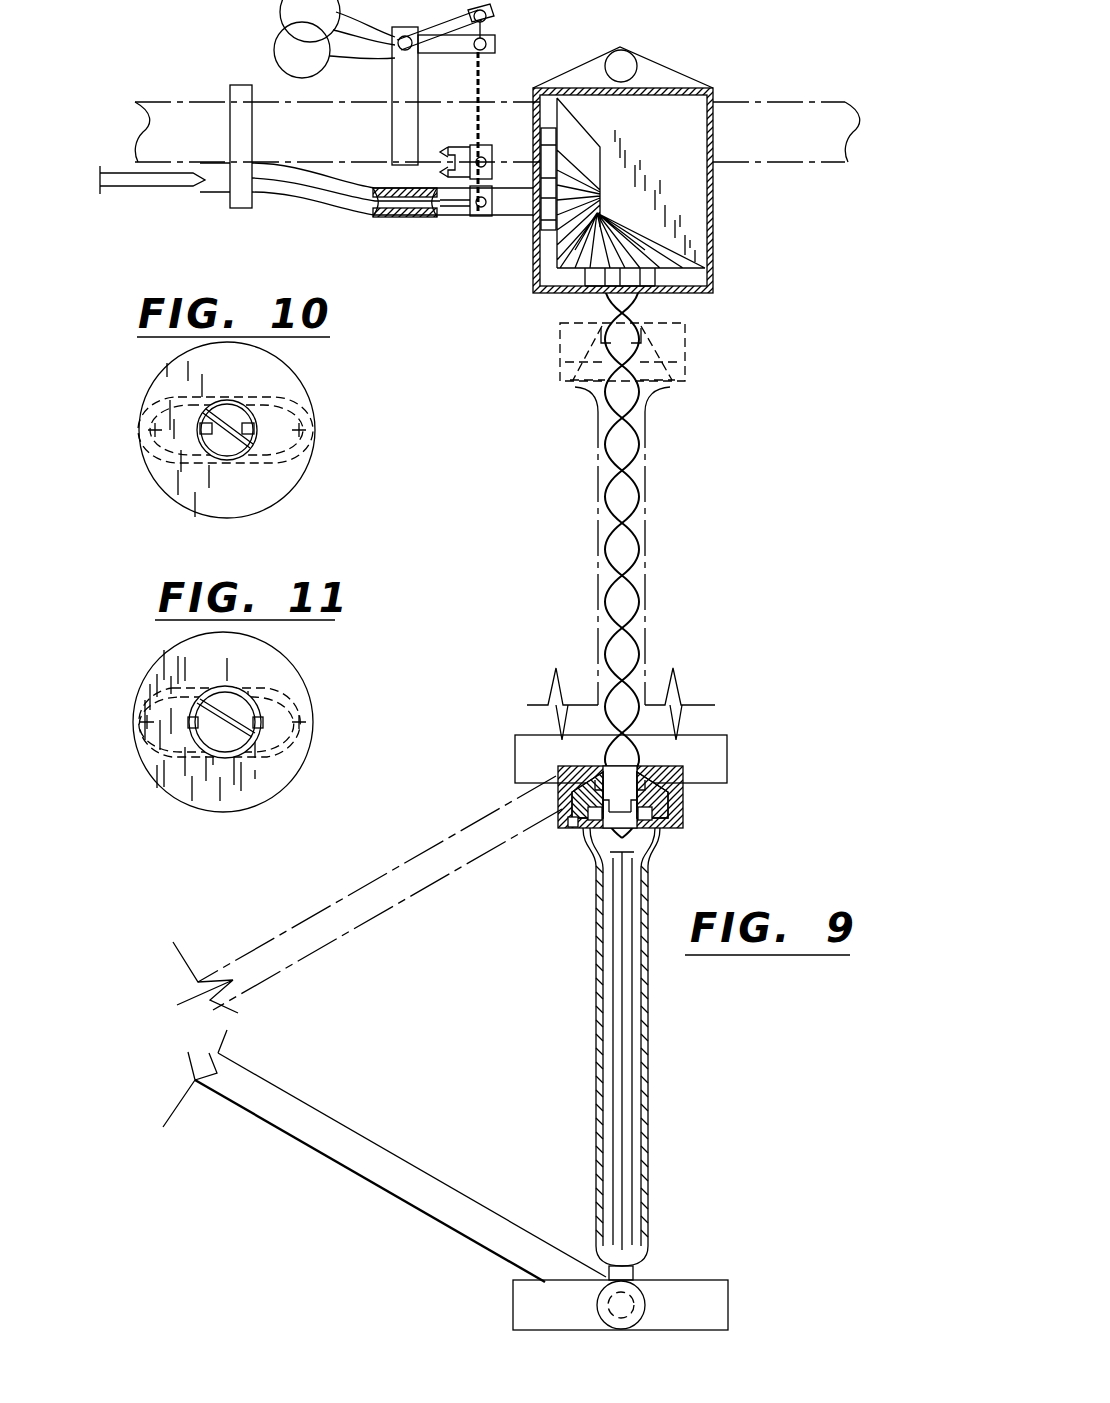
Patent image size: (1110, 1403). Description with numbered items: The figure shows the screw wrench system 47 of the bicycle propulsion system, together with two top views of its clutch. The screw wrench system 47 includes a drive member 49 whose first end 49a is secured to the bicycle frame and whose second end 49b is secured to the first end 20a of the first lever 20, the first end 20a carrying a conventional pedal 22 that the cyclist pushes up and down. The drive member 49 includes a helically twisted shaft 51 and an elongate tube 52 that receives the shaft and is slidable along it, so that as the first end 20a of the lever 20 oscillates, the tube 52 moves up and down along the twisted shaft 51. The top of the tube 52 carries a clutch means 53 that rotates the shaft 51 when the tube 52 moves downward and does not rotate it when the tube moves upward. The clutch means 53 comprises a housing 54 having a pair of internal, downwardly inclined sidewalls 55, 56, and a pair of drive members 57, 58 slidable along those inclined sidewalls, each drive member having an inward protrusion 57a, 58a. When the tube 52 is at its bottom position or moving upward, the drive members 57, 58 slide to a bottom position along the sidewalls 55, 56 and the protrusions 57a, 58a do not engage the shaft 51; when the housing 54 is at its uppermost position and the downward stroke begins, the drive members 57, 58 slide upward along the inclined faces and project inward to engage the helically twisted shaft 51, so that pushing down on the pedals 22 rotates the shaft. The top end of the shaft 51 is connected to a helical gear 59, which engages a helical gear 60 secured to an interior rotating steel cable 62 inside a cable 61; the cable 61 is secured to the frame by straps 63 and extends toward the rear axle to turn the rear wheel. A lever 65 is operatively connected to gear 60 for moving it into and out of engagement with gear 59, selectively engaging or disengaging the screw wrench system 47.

In FIG. 9, the first lever 20 is at (408, 858).
In FIG. 9, the first end of first lever 20a is at (620, 1305).
In FIG. 9, the pedal 22 is at (717, 737).
In FIG. 9, the first screw wrench system 47 is at (730, 654).
In FIG. 9, the drive member 49 is at (690, 805).
In FIG. 9, the first end of drive member 49a is at (714, 168).
In FIG. 9, the second end of drive member 49b is at (634, 1277).
In FIG. 9, the helically twisted shaft 51 is at (618, 493).
In FIG. 10, the helically twisted shaft 51 is at (233, 440).
In FIG. 11, the helically twisted shaft 51 is at (237, 743).
In FIG. 9, the elongate tube 52 is at (630, 882).
In FIG. 9, the clutch means 53 is at (690, 786).
In FIG. 9, the housing 54 is at (686, 335).
In FIG. 10, the housing 54 is at (303, 377).
In FIG. 11, the housing 54 is at (293, 663).
In FIG. 9, the inclined sidewall 55 is at (582, 823).
In FIG. 9, the inclined sidewall 56 is at (665, 827).
In FIG. 9, the drive member 57 is at (583, 833).
In FIG. 10, the drive member 57 is at (140, 437).
In FIG. 11, the drive member 57 is at (167, 698).
In FIG. 9, the inward protrusion 57a is at (597, 800).
In FIG. 10, the inward protrusion 57a is at (237, 437).
In FIG. 11, the inward protrusion 57a is at (190, 722).
In FIG. 9, the drive member 58 is at (655, 828).
In FIG. 10, the drive member 58 is at (307, 433).
In FIG. 11, the drive member 58 is at (307, 718).
In FIG. 9, the inward protrusion 58a is at (636, 800).
In FIG. 10, the inward protrusion 58a is at (250, 427).
In FIG. 11, the inward protrusion 58a is at (247, 695).
In FIG. 9, the helical gear 59 is at (648, 243).
In FIG. 9, the helical gear 60 is at (580, 180).
In FIG. 9, the cable 61 is at (412, 220).
In FIG. 9, the interior rotating steel cable 62 is at (387, 202).
In FIG. 9, the strap 63 is at (238, 203).
In FIG. 9, the lever 65 is at (486, 12).